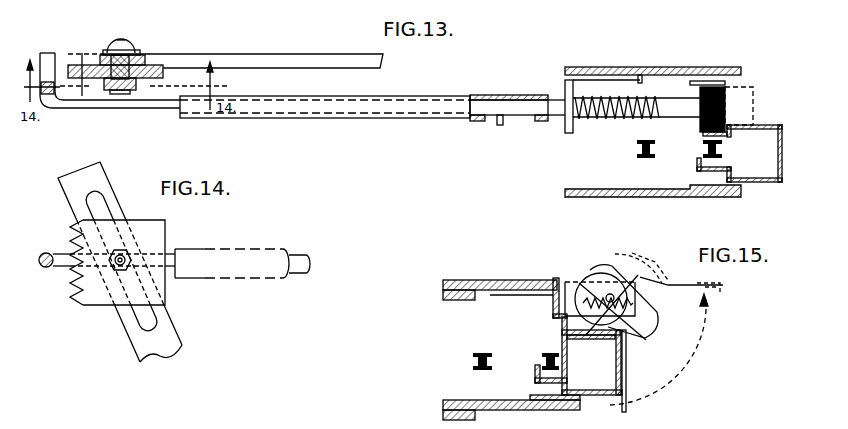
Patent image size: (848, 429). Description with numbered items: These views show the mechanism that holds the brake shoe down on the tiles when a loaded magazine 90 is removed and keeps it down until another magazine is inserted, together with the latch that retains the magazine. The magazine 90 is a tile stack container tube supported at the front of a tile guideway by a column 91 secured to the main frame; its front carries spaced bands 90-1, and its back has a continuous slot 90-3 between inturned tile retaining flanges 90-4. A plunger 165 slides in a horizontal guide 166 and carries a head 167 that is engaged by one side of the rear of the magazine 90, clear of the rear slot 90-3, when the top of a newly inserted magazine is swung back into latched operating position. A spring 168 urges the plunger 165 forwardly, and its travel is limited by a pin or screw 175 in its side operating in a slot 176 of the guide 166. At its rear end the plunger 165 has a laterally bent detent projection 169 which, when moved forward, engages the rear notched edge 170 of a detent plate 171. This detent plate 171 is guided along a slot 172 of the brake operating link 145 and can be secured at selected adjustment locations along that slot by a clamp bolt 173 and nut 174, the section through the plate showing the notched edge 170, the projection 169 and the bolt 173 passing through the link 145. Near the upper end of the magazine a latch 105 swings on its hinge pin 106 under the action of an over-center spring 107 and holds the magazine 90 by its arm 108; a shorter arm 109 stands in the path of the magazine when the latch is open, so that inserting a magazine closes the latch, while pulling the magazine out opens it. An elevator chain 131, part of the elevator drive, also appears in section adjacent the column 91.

In FIG. 13, the magazine 90 is at (780, 125).
In FIG. 15, the magazine 90 is at (597, 396).
In FIG. 15, the spaced bands 90-1 is at (625, 405).
In FIG. 13, the continuous slot 90-3 is at (724, 137).
In FIG. 15, the continuous slot 90-3 is at (569, 340).
In FIG. 13, the inturned tile retaining flanges 90-4 is at (730, 130).
In FIG. 15, the inturned tile retaining flanges 90-4 is at (564, 340).
In FIG. 13, the column 91 is at (673, 67).
In FIG. 15, the column 91 is at (517, 280).
In FIG. 15, the latch 105 is at (683, 355).
In FIG. 15, the hinge pin 106 is at (618, 283).
In FIG. 15, the over-center spring 107 is at (590, 282).
In FIG. 15, the arm 108 is at (628, 404).
In FIG. 15, the shorter arm 109 is at (553, 317).
In FIG. 13, the elevator chain 131 is at (707, 152).
In FIG. 15, the elevator chain 131 is at (540, 364).
In FIG. 13, the brake operating link 145 is at (276, 54).
In FIG. 14, the brake operating link 145 is at (140, 346).
In FIG. 13, the plunger 165 is at (515, 107).
In FIG. 14, the plunger 165 is at (300, 254).
In FIG. 13, the horizontal guide 166 is at (413, 100).
In FIG. 14, the horizontal guide 166 is at (246, 249).
In FIG. 13, the head 167 is at (713, 97).
In FIG. 13, the spring 168 is at (617, 120).
In FIG. 13, the detent projection 169 is at (58, 53).
In FIG. 14, the detent projection 169 is at (52, 254).
In FIG. 13, the rear notched edge 170 is at (72, 90).
In FIG. 14, the rear notched edge 170 is at (72, 295).
In FIG. 13, the detent plate 171 is at (162, 66).
In FIG. 14, the detent plate 171 is at (134, 220).
In FIG. 14, the slot 172 is at (155, 320).
In FIG. 13, the clamp bolt 173 is at (123, 41).
In FIG. 14, the clamp bolt 173 is at (117, 270).
In FIG. 13, the nut 174 is at (123, 94).
In FIG. 14, the nut 174 is at (130, 256).
In FIG. 13, the pin or screw 175 is at (500, 124).
In FIG. 13, the slot 176 is at (537, 122).